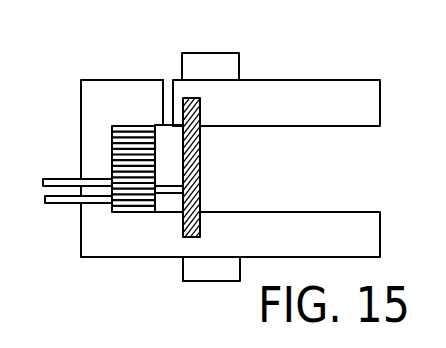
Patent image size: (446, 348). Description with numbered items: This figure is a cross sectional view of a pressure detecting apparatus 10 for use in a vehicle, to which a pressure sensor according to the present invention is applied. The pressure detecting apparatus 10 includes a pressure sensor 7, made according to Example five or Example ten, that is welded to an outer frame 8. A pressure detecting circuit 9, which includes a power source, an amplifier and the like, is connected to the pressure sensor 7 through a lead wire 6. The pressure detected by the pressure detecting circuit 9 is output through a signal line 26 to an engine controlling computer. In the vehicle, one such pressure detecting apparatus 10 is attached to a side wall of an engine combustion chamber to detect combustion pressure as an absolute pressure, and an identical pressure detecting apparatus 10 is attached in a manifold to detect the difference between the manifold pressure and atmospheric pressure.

The lead wire 6 is at (170, 193).
The pressure sensor 7 is at (202, 126).
The outer frame 8 is at (311, 95).
The pressure detecting circuit 9 is at (135, 147).
The pressure detecting apparatus 10 is at (166, 171).
The signal line 26 is at (59, 207).